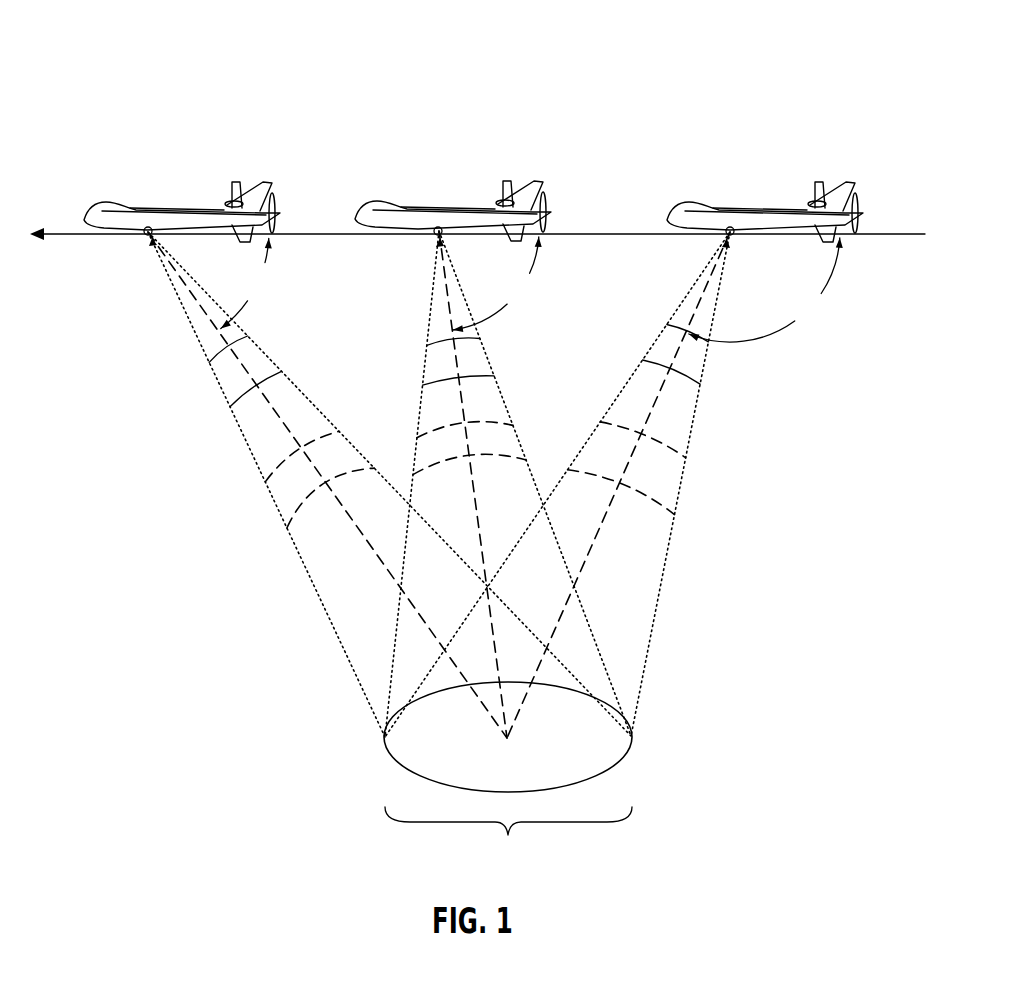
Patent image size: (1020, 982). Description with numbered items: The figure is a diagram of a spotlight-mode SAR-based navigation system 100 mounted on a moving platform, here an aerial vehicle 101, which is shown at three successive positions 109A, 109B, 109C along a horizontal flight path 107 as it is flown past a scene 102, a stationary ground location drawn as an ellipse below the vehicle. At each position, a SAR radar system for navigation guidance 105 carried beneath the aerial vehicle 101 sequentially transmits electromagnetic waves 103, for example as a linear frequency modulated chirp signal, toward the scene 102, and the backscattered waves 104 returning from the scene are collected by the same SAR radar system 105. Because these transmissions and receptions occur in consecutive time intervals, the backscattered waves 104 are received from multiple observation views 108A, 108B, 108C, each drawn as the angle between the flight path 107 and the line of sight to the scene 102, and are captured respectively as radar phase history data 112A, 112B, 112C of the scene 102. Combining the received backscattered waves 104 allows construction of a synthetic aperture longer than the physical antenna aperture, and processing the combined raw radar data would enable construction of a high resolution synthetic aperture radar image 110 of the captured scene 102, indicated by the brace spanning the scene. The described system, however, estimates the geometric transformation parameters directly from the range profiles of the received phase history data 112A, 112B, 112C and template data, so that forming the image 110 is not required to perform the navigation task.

The SAR-based navigation system 100 is at (170, 57).
The aerial vehicle 101 is at (441, 175).
The scene 102 is at (603, 775).
The electromagnetic waves 103 is at (252, 392).
The backscattered waves 104 is at (318, 440).
The SAR radar system for navigation guidance 105 is at (147, 236).
The flight path 107 is at (63, 237).
The observation view 108A is at (825, 313).
The observation view 108B is at (540, 302).
The observation view 108C is at (280, 291).
The position 109A is at (697, 152).
The position 109B is at (418, 162).
The position 109C is at (123, 162).
The synthetic aperture radar image 110 is at (508, 841).
The radar phase history data 112A is at (662, 588).
The radar phase history data 112B is at (505, 407).
The radar phase history data 112C is at (313, 588).